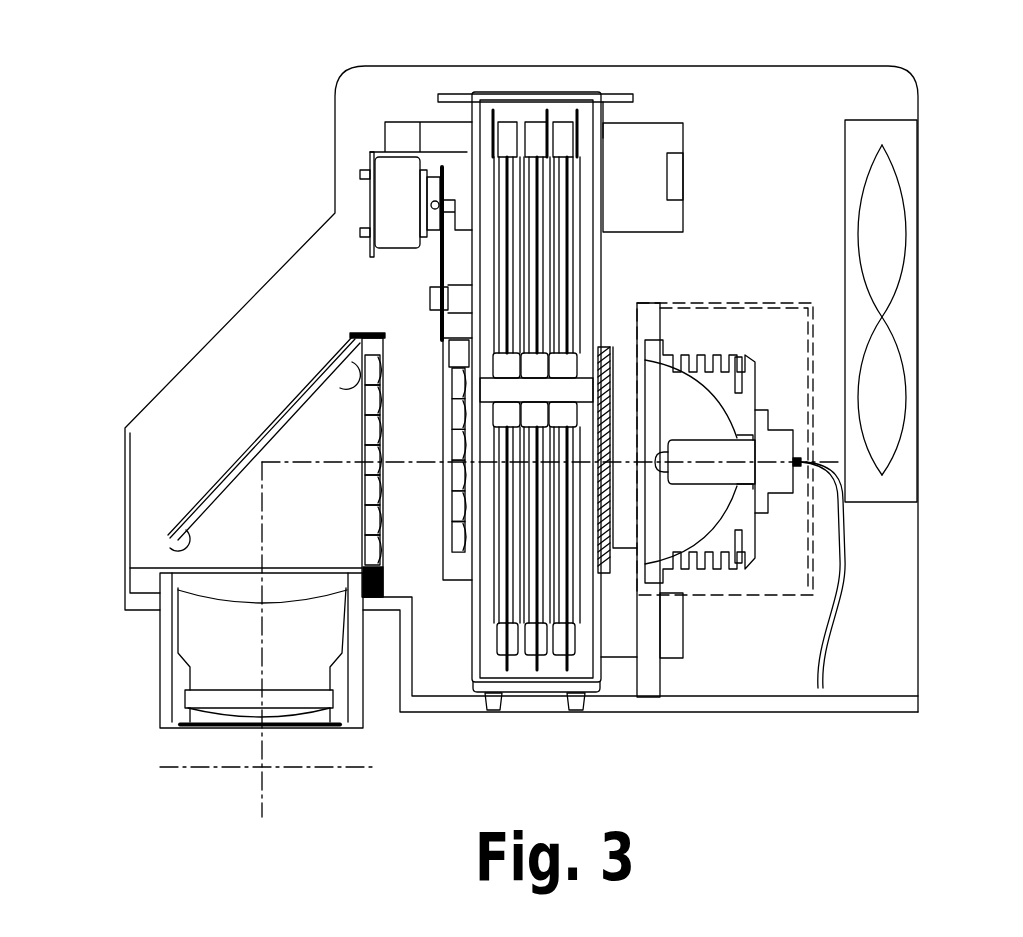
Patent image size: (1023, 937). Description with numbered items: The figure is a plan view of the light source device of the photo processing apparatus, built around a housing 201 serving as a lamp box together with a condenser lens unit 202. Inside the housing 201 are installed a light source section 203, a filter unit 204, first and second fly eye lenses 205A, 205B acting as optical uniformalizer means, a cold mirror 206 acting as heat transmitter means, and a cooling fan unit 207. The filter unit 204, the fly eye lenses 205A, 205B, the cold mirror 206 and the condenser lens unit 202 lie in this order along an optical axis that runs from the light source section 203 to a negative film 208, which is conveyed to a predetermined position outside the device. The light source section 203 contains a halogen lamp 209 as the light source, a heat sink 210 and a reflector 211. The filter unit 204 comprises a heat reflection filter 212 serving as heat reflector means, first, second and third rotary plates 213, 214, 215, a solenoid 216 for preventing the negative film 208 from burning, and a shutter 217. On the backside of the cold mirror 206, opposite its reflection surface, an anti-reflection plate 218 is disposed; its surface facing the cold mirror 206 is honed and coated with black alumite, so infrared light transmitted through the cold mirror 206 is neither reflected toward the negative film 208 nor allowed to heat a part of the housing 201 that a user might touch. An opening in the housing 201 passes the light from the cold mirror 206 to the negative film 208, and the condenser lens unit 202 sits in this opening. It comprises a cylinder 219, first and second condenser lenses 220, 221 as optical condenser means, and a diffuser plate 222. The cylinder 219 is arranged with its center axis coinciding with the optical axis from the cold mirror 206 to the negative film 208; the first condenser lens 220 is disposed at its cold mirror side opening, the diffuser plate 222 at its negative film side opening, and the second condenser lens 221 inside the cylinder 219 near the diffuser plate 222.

The housing 201 is at (925, 652).
The condenser lens unit 202 is at (242, 690).
The light source section 203 is at (772, 300).
The filter unit 204 is at (540, 92).
The first fly eye lens 205A is at (455, 550).
The second fly eye lens 205B is at (378, 482).
The cold mirror 206 is at (293, 418).
The cooling fan unit 207 is at (903, 477).
The negative film 208 is at (192, 768).
The halogen lamp 209 is at (712, 473).
The heat sink 210 is at (782, 485).
The reflector 211 is at (722, 393).
The heat reflection filter 212 is at (620, 357).
The first rotary plate 213 is at (563, 645).
The second rotary plate 214 is at (535, 648).
The third rotary plate 215 is at (508, 648).
The solenoid 216 is at (400, 228).
The shutter 217 is at (442, 372).
The anti-reflection plate 218 is at (205, 483).
The cylinder 219 is at (350, 702).
The first condenser lens 220 is at (223, 590).
The second condenser lens 221 is at (230, 700).
The diffuser plate 222 is at (317, 727).